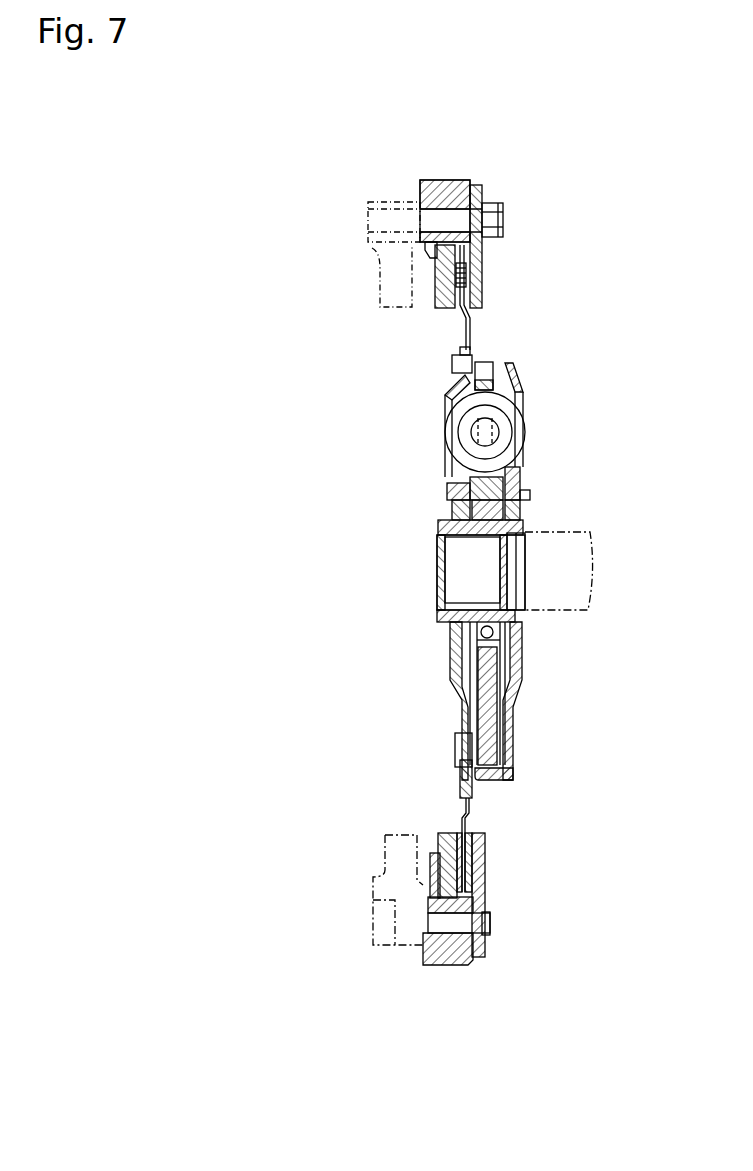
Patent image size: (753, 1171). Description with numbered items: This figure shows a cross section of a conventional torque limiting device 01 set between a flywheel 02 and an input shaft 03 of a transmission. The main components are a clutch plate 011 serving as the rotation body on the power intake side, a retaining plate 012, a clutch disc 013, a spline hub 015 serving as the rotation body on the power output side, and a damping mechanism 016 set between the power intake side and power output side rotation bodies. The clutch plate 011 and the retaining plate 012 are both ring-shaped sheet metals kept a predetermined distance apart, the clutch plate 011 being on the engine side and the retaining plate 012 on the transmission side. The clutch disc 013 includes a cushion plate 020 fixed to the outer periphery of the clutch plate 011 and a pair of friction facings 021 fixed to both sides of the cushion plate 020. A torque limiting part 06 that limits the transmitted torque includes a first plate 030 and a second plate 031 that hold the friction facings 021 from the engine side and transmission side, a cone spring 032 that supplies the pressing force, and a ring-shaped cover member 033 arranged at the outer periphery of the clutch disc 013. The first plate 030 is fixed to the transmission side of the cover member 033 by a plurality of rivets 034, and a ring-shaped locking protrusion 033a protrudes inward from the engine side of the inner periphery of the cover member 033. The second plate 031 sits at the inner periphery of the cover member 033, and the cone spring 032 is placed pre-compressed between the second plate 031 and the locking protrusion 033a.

The cable device 01 is at (495, 568).
The clutch plate 011 is at (443, 395).
The retaining plate 012 is at (522, 390).
The clutch disc 013 is at (443, 320).
The spline hub 015 is at (433, 515).
The damping mechanism 016 is at (530, 435).
The cushion plate 020 is at (452, 342).
The friction facings 021 is at (465, 293).
The flywheel 02 is at (372, 260).
The input shaft 03 is at (577, 537).
The first plate 030 is at (480, 190).
The second plate 031 is at (437, 305).
The cone spring 032 is at (402, 243).
The cover member 033 is at (437, 182).
The locking protrusion 033a is at (432, 250).
The rivets 034 is at (492, 920).
The torque limiting part 06 is at (490, 258).